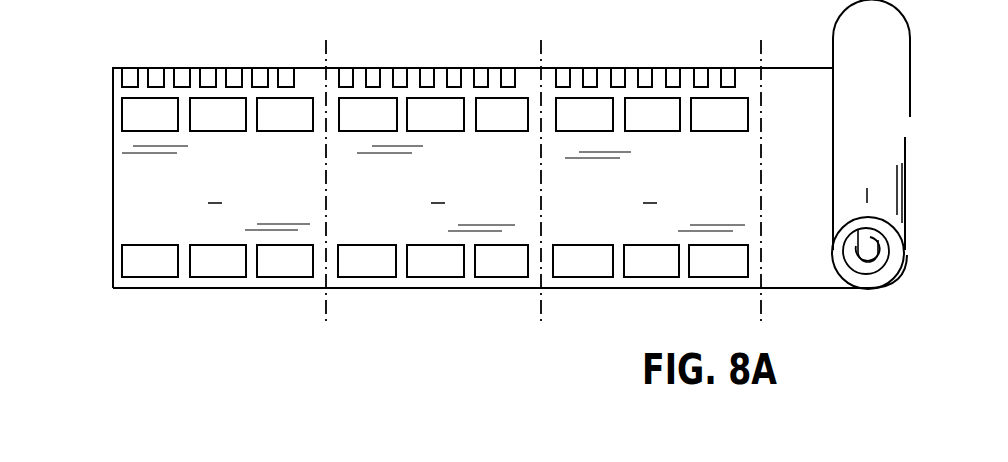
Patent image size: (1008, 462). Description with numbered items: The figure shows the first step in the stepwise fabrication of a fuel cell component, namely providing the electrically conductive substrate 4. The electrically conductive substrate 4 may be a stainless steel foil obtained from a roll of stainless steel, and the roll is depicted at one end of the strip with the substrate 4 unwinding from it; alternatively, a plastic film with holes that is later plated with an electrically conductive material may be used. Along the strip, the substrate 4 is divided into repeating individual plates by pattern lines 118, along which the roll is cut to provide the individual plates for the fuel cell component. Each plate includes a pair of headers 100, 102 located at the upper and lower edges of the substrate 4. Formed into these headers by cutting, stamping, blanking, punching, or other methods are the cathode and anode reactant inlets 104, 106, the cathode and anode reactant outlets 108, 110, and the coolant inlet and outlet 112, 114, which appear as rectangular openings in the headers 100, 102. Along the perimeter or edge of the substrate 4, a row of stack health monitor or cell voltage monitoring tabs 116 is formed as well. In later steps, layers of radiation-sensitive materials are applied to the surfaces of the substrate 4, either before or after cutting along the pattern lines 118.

The header 100 is at (78, 88).
The header 102 is at (74, 272).
The cathode reactant inlet 104 is at (167, 126).
The anode reactant inlet 106 is at (302, 126).
The cathode reactant outlet 108 is at (302, 273).
The anode reactant outlet 110 is at (167, 273).
The coolant inlet 112 is at (235, 126).
The coolant outlet 114 is at (235, 273).
The stack health monitor or cell voltage monitoring tabs 116 is at (222, 68).
The pattern lines 118 is at (327, 52).
The electrically conductive substrate 4 is at (432, 193).